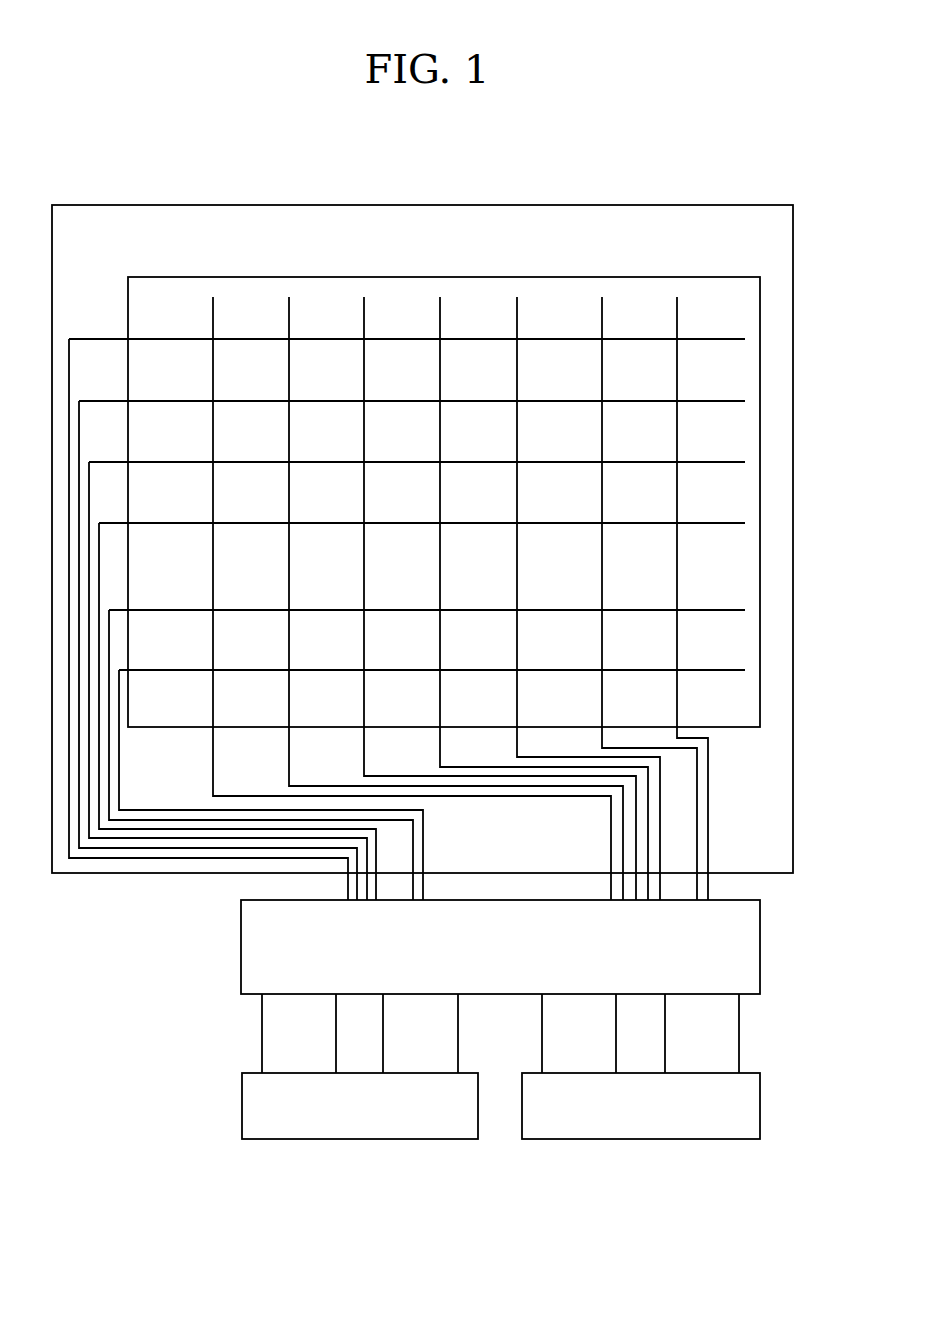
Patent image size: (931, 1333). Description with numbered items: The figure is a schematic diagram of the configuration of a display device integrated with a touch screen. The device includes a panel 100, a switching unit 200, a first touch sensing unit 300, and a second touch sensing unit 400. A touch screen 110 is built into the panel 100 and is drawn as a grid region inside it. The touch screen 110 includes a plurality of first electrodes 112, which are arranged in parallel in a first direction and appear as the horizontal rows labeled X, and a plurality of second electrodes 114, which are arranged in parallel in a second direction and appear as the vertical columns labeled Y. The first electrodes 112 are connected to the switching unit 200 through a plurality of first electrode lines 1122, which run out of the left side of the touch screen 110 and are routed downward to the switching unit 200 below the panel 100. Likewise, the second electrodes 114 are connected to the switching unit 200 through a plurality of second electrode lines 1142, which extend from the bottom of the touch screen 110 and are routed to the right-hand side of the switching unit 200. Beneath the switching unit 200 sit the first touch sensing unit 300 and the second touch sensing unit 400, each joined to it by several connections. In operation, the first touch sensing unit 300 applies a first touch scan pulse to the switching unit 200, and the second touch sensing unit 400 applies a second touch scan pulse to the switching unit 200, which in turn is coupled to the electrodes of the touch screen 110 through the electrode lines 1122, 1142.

The panel 100 is at (537, 205).
The touch screen 110 is at (641, 277).
The first electrodes 112 is at (718, 339).
The second electrodes 114 is at (214, 323).
The first electrode lines 1122 is at (95, 338).
The second electrode lines 1142 is at (709, 776).
The switching unit 200 is at (240, 945).
The first touch sensing unit 300 is at (445, 1140).
The second touch sensing unit 400 is at (725, 1140).